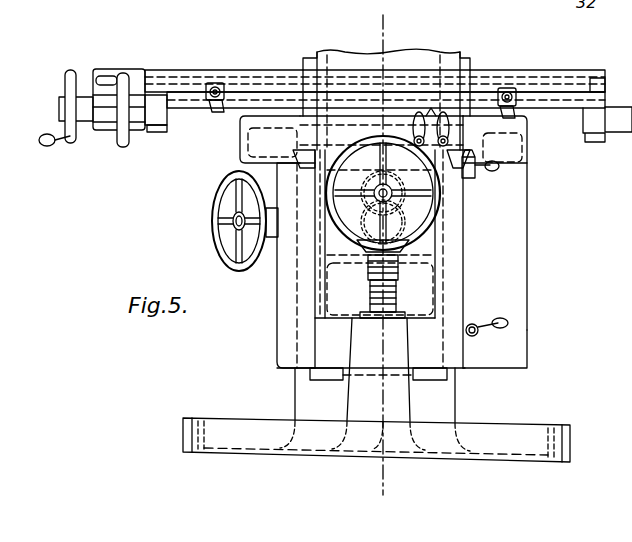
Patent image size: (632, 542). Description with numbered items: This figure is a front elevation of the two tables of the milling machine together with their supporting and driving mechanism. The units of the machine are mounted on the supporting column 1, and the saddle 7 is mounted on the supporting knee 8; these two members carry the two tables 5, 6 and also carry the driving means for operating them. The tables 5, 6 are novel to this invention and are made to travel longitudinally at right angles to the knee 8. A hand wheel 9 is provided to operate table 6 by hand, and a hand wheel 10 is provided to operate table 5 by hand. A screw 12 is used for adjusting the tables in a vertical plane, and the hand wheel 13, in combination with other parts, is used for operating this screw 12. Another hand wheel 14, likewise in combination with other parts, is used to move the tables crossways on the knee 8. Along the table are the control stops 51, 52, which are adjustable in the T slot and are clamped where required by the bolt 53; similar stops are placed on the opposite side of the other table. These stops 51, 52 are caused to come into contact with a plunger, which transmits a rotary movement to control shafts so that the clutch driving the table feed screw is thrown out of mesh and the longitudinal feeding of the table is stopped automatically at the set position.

The supporting column 1 is at (463, 385).
The table 5 is at (157, 132).
The table 6 is at (98, 132).
The saddle 7 is at (253, 116).
The supporting knee 8 is at (274, 362).
The hand wheel 9 is at (69, 70).
The hand wheel 10 is at (121, 73).
The screw 12 is at (395, 297).
The hand wheel 13 is at (214, 204).
The hand wheel 14 is at (424, 229).
The control stop 51 is at (220, 83).
The control stop 52 is at (509, 88).
The bolt 53 is at (212, 86).